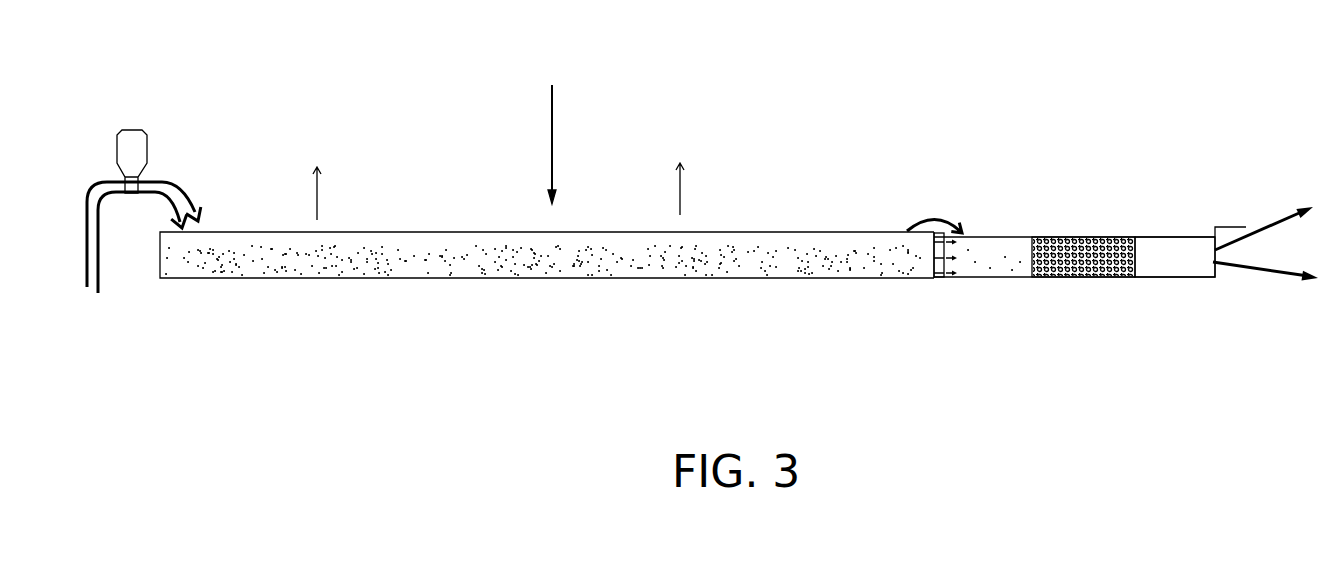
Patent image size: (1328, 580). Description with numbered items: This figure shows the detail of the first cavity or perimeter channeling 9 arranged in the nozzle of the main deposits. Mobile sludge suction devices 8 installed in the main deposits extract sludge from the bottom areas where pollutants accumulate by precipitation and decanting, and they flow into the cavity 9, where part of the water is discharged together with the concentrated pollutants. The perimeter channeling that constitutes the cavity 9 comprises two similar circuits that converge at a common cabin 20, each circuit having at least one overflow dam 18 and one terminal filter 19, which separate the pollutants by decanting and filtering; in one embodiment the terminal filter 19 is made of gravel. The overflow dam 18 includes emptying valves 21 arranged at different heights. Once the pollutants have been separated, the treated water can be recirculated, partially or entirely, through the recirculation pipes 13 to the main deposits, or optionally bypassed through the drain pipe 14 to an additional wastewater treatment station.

The sludge suction devices 8 is at (108, 182).
The first cavity or perimeter channeling 9 is at (553, 130).
The recirculation pipes 13 is at (1270, 222).
The drain pipe 14 is at (1252, 270).
The overflow dam 18 is at (934, 236).
The terminal filter 19 is at (1079, 272).
The common cabin 20 is at (1167, 258).
The emptying valves 21 is at (934, 275).